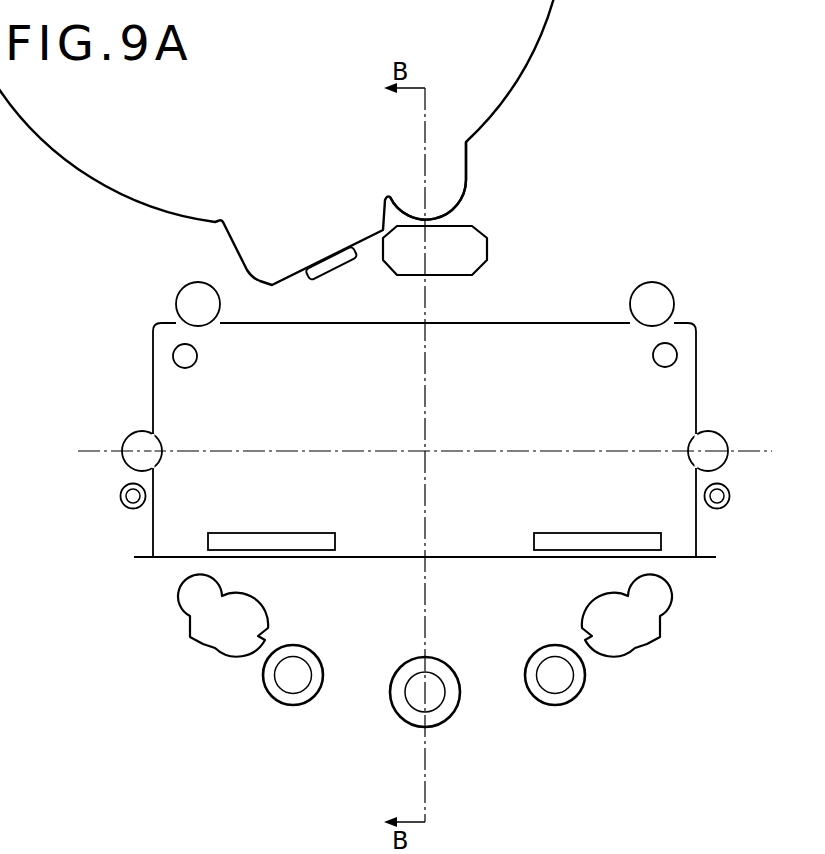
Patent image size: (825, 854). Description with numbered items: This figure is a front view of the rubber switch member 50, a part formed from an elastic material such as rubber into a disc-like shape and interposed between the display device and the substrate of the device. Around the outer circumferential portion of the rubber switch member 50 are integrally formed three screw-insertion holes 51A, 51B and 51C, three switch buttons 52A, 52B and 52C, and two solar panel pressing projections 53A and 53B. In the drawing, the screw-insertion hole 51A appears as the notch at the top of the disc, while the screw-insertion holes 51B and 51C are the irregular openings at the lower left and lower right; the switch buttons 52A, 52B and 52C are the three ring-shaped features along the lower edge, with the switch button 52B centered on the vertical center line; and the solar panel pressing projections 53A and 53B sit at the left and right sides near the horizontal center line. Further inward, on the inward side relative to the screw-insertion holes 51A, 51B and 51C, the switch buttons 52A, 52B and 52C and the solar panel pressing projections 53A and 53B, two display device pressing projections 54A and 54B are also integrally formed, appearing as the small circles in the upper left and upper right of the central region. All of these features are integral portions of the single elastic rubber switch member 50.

The rubber switch member 50 is at (605, 217).
The screw-insertion hole 51A is at (466, 176).
The screw-insertion hole 51B is at (213, 657).
The screw-insertion hole 51C is at (647, 647).
The switch button 52A is at (278, 695).
The switch button 52B is at (438, 727).
The switch button 52C is at (557, 707).
The solar panel pressing projection 53A is at (132, 508).
The solar panel pressing projection 53B is at (718, 509).
The display device pressing projection 54A is at (195, 362).
The display device pressing projection 54B is at (653, 358).